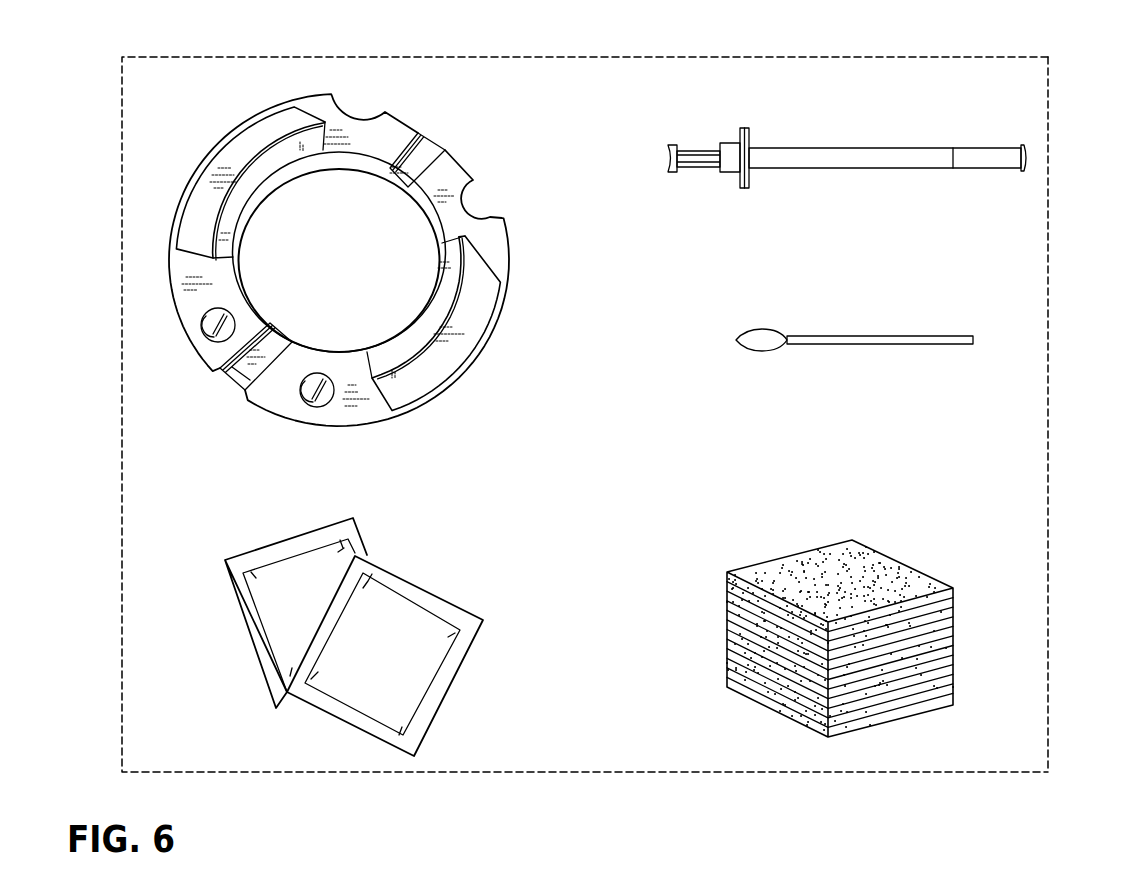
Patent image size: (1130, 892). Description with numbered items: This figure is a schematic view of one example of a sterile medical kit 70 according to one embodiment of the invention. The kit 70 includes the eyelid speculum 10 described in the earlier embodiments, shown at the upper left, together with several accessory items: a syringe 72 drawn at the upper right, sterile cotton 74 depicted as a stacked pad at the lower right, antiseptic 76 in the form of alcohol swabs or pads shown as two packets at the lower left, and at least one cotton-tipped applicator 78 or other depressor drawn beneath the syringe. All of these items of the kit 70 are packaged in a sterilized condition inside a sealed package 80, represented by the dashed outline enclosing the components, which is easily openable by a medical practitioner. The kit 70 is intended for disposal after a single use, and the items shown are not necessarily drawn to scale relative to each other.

The sterile medical kit 70 is at (123, 44).
The eyelid speculum 10 is at (190, 130).
The syringe 72 is at (880, 122).
The sterile cotton 74 is at (913, 548).
The antiseptic 76 is at (232, 535).
The cotton-tipped applicator 78 is at (935, 315).
The sealed package 80 is at (1050, 250).